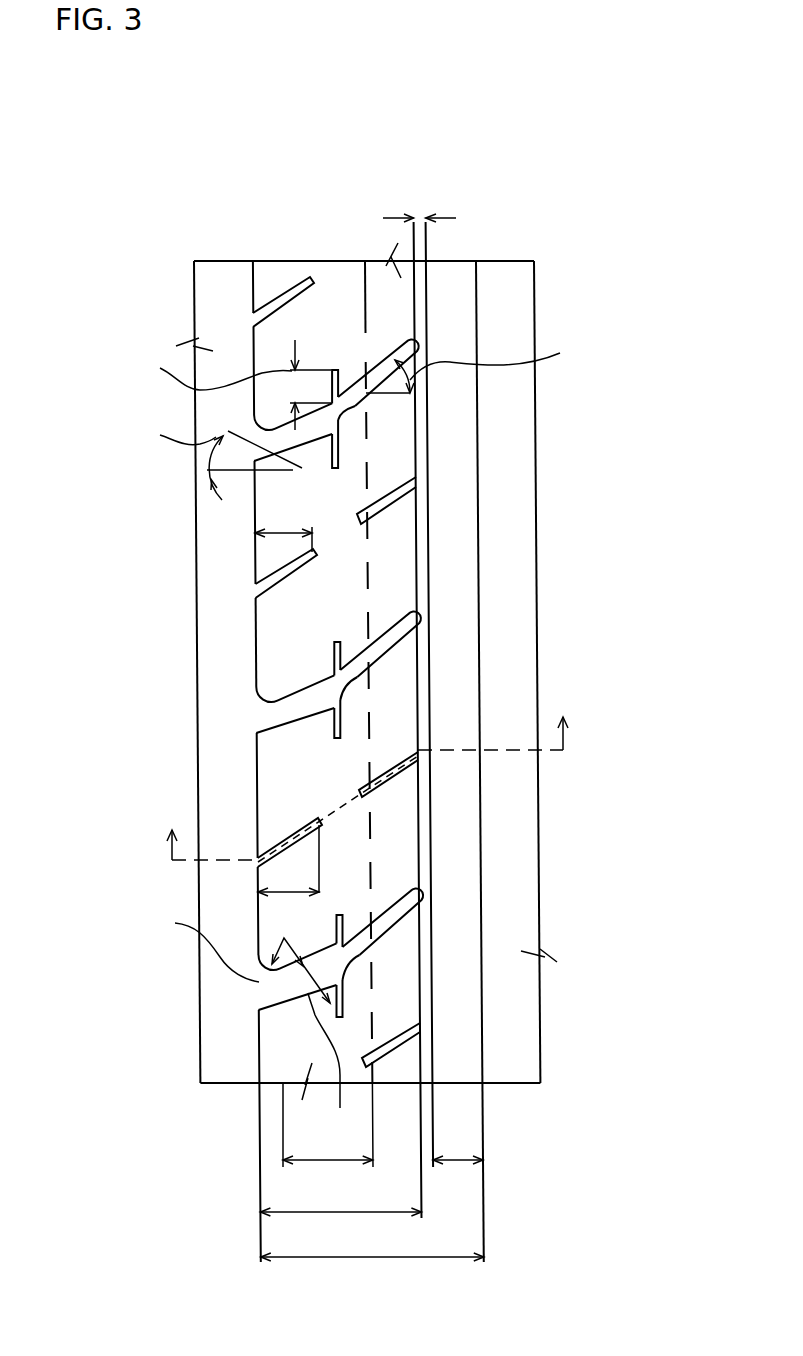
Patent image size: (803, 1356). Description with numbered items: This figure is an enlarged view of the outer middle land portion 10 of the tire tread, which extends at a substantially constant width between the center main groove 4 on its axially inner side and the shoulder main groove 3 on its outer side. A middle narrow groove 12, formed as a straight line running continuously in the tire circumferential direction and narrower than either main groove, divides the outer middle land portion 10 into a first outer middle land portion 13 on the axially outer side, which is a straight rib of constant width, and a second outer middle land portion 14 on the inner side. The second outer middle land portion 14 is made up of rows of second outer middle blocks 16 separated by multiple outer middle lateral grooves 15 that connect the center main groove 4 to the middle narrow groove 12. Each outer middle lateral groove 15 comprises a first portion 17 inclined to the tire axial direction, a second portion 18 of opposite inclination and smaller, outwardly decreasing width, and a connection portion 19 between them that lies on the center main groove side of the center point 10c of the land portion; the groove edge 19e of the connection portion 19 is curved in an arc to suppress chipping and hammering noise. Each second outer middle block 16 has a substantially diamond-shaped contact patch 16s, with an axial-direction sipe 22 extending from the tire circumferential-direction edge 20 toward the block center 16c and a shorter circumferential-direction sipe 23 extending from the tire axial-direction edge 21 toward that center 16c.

The shoulder main groove 3 is at (505, 292).
The center main groove 4 is at (226, 290).
The outer middle land portion 10 is at (493, 158).
The center point of outer middle land portion 10c is at (372, 1012).
The middle narrow groove 12 is at (417, 508).
The first outer middle land portion 13 is at (456, 290).
The second outer middle land portion 14 is at (334, 290).
The outer middle lateral groove 15 is at (343, 670).
The second outer middle block 16 is at (290, 790).
The contact patch 16s is at (292, 644).
The center of second outer middle block 16c is at (295, 588).
The first portion 17 is at (268, 720).
The second portion 18 is at (334, 704).
The connection portion 19 is at (280, 734).
The groove edge of connection portion 19e is at (257, 1012).
The tire circumferential-direction edge 20 is at (285, 563).
The tire axial-direction edge 21 is at (352, 412).
The axial-direction sipe 22 is at (265, 560).
The circumferential-direction sipe 23 is at (340, 370).